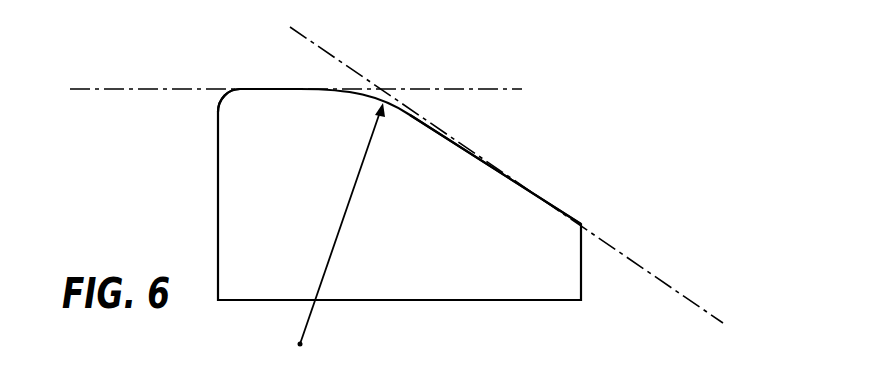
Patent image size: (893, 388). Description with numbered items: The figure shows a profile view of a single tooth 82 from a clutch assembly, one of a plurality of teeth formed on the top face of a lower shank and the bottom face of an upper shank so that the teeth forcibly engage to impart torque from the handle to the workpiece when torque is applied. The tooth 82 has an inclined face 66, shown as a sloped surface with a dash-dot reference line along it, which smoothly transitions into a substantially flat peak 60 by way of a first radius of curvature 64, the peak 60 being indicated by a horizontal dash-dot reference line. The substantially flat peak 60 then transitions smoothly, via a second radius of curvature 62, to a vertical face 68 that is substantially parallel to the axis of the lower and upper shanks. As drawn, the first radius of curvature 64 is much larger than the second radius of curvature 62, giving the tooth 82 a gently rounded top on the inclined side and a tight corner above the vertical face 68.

The substantially flat peak 60 is at (156, 89).
The second radius of curvature 62 is at (236, 104).
The first radius of curvature 64 is at (360, 175).
The inclined face 66 is at (662, 280).
The vertical face 68 is at (218, 266).
The tooth 82 is at (582, 106).